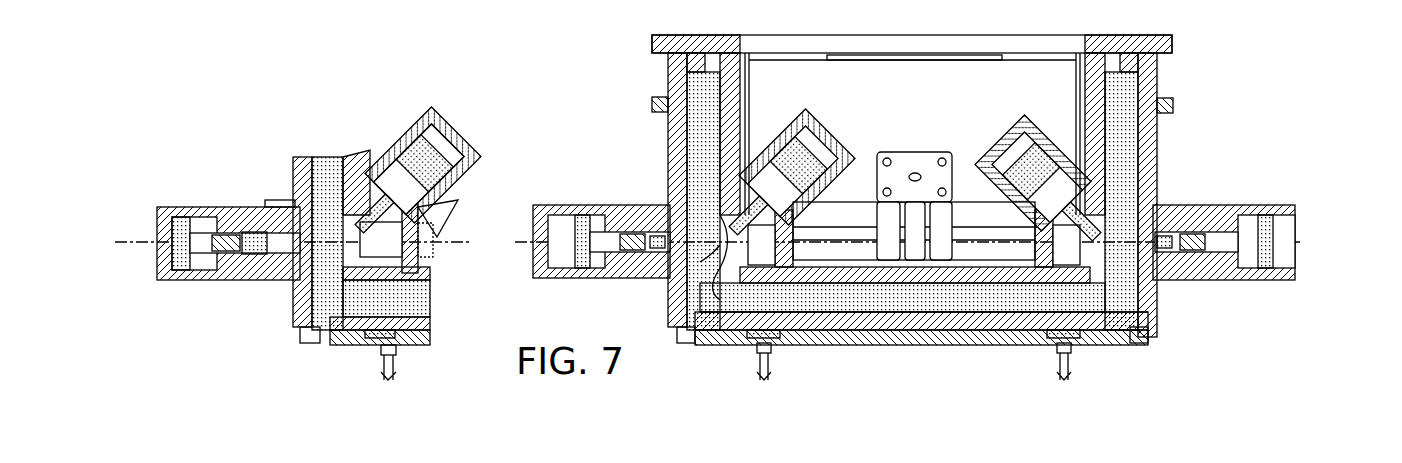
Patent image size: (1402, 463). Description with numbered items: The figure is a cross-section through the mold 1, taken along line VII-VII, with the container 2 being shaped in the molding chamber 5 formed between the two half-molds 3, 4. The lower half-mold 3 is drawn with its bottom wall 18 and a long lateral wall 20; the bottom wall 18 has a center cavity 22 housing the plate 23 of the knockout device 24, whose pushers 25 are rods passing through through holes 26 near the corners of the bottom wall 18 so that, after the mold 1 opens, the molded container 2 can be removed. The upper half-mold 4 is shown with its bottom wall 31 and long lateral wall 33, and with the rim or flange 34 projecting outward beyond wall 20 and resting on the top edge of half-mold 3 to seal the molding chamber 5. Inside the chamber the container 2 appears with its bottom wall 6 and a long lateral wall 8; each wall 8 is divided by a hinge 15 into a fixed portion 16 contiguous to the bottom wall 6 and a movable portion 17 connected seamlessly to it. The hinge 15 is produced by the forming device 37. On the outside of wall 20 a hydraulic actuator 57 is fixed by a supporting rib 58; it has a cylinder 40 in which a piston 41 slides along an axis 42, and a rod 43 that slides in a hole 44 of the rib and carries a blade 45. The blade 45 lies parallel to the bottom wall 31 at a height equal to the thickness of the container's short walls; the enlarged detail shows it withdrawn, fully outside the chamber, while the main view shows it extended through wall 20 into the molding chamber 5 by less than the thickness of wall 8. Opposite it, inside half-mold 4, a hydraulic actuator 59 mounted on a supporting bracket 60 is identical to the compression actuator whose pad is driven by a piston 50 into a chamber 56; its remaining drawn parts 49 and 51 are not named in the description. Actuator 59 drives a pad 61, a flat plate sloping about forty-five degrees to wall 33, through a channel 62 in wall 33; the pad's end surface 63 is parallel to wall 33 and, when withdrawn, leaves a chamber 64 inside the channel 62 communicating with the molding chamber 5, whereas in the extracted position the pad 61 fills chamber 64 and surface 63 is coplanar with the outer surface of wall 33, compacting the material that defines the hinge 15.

The mold 1 is at (1160, 351).
The collapsible container 2 is at (858, 293).
The half-mold 3 is at (690, 346).
The half-mold 4 is at (1077, 82).
The molding chamber 5 is at (980, 294).
The bottom wall 6 is at (907, 278).
The lateral wall 8 is at (664, 105).
The hinge 15 is at (694, 290).
The fixed portion 16 is at (702, 146).
The movable portion 17 is at (702, 262).
The bottom wall 18 is at (876, 342).
The lateral wall 20 is at (672, 76).
The center cavity 22 is at (713, 252).
The plate 23 is at (986, 314).
The knockout device 24 is at (1115, 388).
The pushers 25 is at (769, 366).
The through holes 26 is at (758, 335).
The bottom wall 31 is at (936, 286).
The lateral wall 33 is at (730, 68).
The rim or flange 34 is at (1146, 48).
The forming device 37 is at (562, 297).
The cylinder 40 is at (160, 280).
The piston 41 is at (185, 262).
The axis 42 is at (130, 242).
The rod 43 is at (203, 235).
The hole 44 is at (255, 236).
The blade 45 is at (283, 238).
The cylinder housing 49 is at (441, 150).
The piston 50 is at (406, 140).
The piston 51 is at (412, 180).
The chamber 56 is at (328, 248).
The hydraulic actuator 57 is at (152, 200).
The supporting rib 58 is at (302, 256).
The hydraulic actuator 59 is at (435, 122).
The supporting bracket 60 is at (412, 240).
The pad 61 is at (376, 246).
The channel 62 is at (362, 252).
The surface 63 is at (363, 214).
The chamber 64 is at (366, 256).